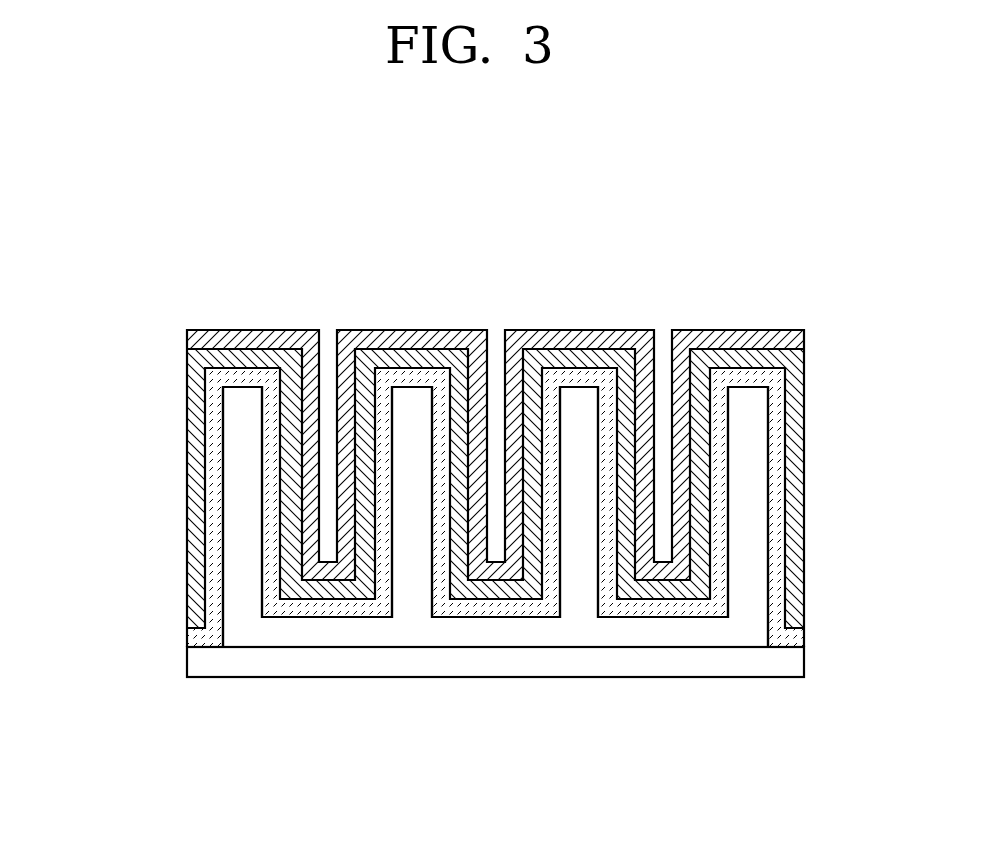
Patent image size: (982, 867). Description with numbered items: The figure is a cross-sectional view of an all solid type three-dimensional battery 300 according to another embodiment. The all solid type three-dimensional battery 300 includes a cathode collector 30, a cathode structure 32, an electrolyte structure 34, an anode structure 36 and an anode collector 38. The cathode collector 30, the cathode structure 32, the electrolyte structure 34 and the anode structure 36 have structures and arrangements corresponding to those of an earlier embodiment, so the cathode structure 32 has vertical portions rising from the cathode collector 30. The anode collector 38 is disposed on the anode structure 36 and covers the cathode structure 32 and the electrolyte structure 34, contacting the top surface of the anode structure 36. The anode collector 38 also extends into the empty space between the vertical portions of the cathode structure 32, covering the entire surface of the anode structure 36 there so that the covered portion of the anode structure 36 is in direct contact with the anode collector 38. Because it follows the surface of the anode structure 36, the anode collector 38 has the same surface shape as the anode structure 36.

The all solid type 3D battery 300 is at (165, 323).
The cathode collector 30 is at (361, 672).
The cathode structure 32 is at (758, 566).
The electrolyte structure 34 is at (775, 445).
The anode structure 36 is at (795, 380).
The anode collector 38 is at (745, 340).